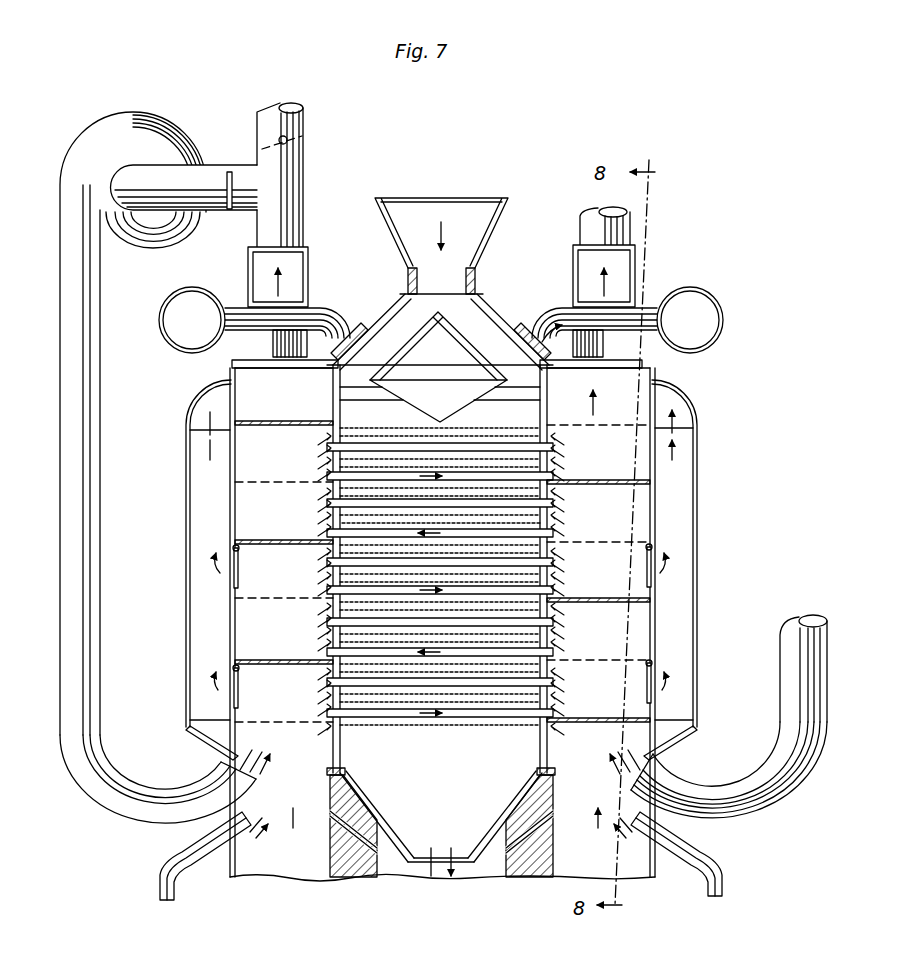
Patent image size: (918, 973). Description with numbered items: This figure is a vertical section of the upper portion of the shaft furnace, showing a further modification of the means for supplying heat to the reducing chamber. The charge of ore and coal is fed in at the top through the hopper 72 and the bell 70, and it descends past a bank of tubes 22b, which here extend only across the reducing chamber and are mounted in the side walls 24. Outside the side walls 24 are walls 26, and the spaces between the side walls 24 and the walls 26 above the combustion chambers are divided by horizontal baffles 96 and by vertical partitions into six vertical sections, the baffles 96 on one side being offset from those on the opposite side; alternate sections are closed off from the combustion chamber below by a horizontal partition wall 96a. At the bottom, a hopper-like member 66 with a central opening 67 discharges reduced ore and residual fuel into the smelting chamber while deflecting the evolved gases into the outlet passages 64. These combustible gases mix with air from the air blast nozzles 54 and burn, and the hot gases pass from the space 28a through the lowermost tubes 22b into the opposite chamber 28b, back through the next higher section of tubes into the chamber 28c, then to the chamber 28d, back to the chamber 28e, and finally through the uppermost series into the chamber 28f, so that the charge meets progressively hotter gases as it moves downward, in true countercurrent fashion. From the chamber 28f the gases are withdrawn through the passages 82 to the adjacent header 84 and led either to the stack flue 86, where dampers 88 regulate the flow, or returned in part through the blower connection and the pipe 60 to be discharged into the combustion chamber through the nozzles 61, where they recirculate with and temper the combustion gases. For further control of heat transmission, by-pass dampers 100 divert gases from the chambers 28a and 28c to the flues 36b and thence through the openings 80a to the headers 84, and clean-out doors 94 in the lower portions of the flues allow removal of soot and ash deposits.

The hopper 72 is at (456, 205).
The dampers 88 is at (298, 146).
The stack flues 86 is at (285, 204).
The headers 84 is at (290, 283).
The passages 82 is at (262, 345).
The openings 80a is at (274, 372).
The bell 70 is at (455, 355).
The horizontal baffles 96 is at (334, 410).
The horizontal partition wall 96a is at (597, 738).
The pipe 60 is at (92, 448).
The side walls 24 is at (265, 500).
The chamber 28e is at (284, 442).
The chamber 28c is at (284, 567).
The space 28a is at (284, 686).
The chamber 28f is at (598, 435).
The chamber 28d is at (598, 501).
The chamber 28b is at (598, 619).
The tubes 22b is at (568, 574).
The by-pass dampers 100 is at (240, 576).
The flues 36b is at (210, 620).
The walls 26 is at (672, 471).
The clean out doors 94 is at (190, 745).
The nozzles 61 is at (232, 768).
The nozzles 54 is at (240, 828).
The hopper-like member 66 is at (398, 838).
The central opening 67 is at (440, 874).
The outlet passages 64 is at (345, 822).